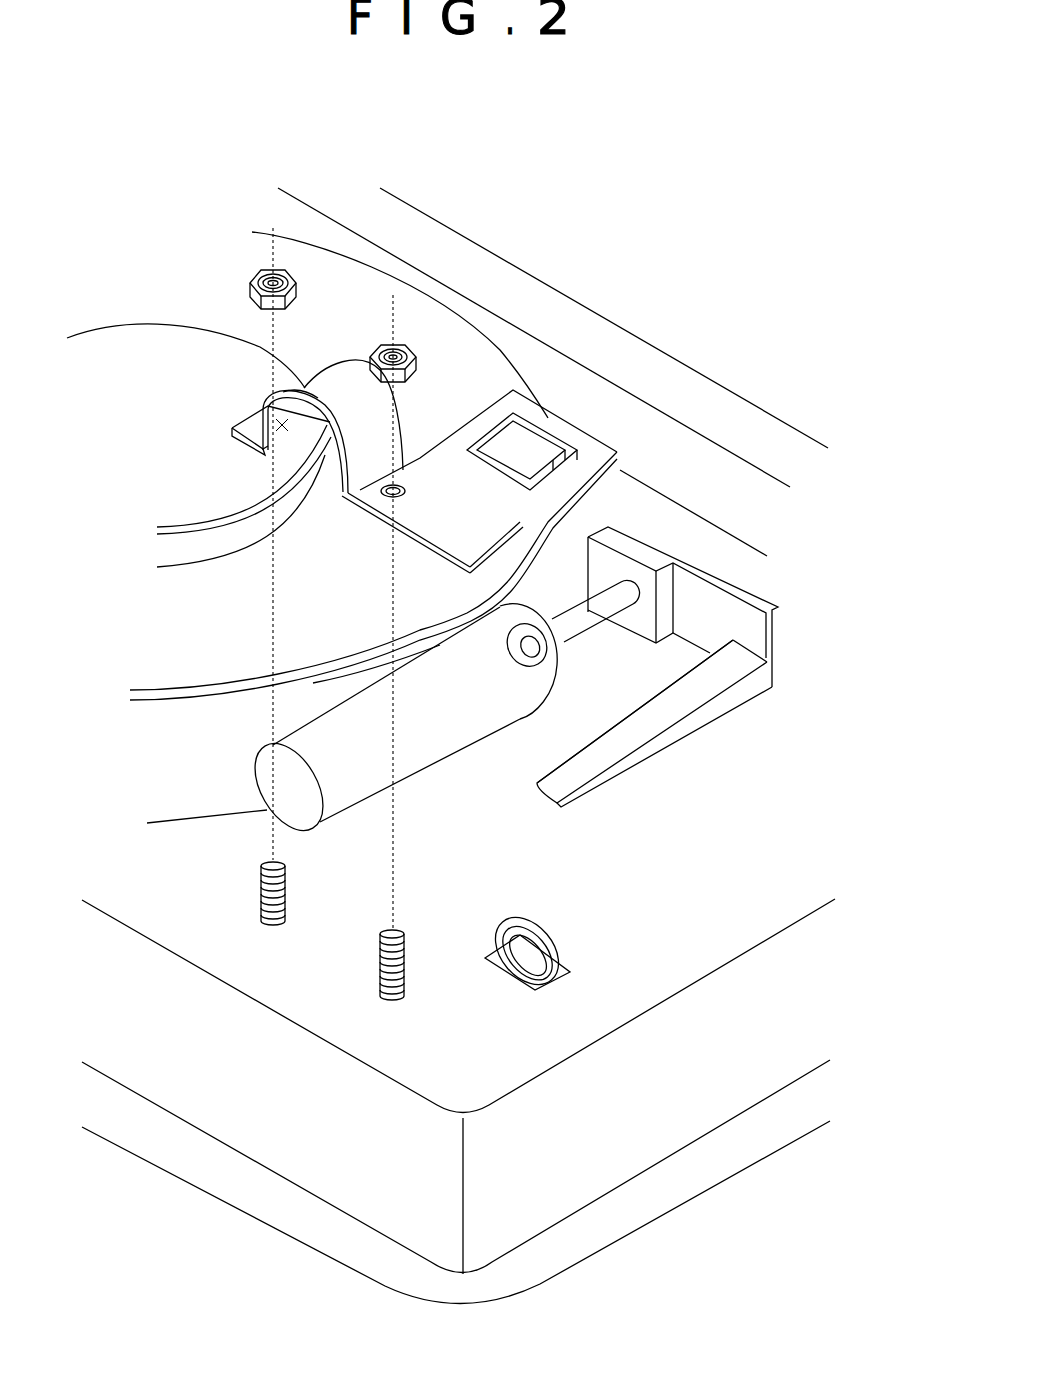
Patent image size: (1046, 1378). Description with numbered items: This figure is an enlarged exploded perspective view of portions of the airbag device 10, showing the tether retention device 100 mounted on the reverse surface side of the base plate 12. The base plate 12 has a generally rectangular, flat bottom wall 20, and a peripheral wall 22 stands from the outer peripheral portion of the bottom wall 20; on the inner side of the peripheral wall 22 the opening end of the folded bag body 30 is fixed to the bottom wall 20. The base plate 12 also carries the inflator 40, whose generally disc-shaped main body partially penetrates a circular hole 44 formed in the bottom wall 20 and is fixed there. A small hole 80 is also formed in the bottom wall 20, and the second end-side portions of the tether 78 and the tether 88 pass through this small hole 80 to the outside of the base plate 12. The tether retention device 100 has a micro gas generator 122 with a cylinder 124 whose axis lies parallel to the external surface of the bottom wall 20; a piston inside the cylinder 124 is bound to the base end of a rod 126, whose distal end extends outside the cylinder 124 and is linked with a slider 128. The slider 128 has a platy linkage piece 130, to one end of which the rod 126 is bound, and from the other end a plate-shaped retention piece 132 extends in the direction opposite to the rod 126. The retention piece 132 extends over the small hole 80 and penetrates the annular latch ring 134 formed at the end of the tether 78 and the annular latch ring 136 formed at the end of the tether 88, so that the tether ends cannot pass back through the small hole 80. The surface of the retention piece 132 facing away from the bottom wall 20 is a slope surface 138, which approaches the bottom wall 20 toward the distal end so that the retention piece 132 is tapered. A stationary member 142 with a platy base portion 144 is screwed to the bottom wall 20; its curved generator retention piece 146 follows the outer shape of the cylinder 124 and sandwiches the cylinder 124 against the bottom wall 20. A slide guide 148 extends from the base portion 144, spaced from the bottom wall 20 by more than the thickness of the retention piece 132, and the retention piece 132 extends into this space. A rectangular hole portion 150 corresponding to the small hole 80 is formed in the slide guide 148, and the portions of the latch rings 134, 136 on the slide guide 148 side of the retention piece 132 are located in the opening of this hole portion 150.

The holding structure 10 is at (556, 243).
The base plate 12 is at (458, 1106).
The bottom wall 20 is at (645, 993).
The peripheral wall 22 is at (618, 1170).
The bag body 30 is at (575, 1250).
The inflator 40 is at (323, 268).
The circular hole 44 is at (171, 812).
The tether 78 is at (497, 940).
The small hole 80 is at (558, 928).
The tether 88 is at (580, 918).
The tether retention device 100 is at (585, 393).
The micro gas generator 122 is at (449, 727).
The cylinder 124 is at (417, 762).
The rod 126 is at (580, 626).
The slider 128 is at (675, 621).
The linkage piece 130 is at (618, 548).
The retention piece 132 is at (732, 703).
The latch ring 134 is at (512, 928).
The latch ring 136 is at (574, 940).
The slope surface 138 is at (630, 740).
The stationary member 142 is at (349, 511).
The base portion 144 is at (452, 543).
The generator retention piece 146 is at (343, 378).
The slide guide 148 is at (477, 420).
The hole portion 150 is at (543, 427).